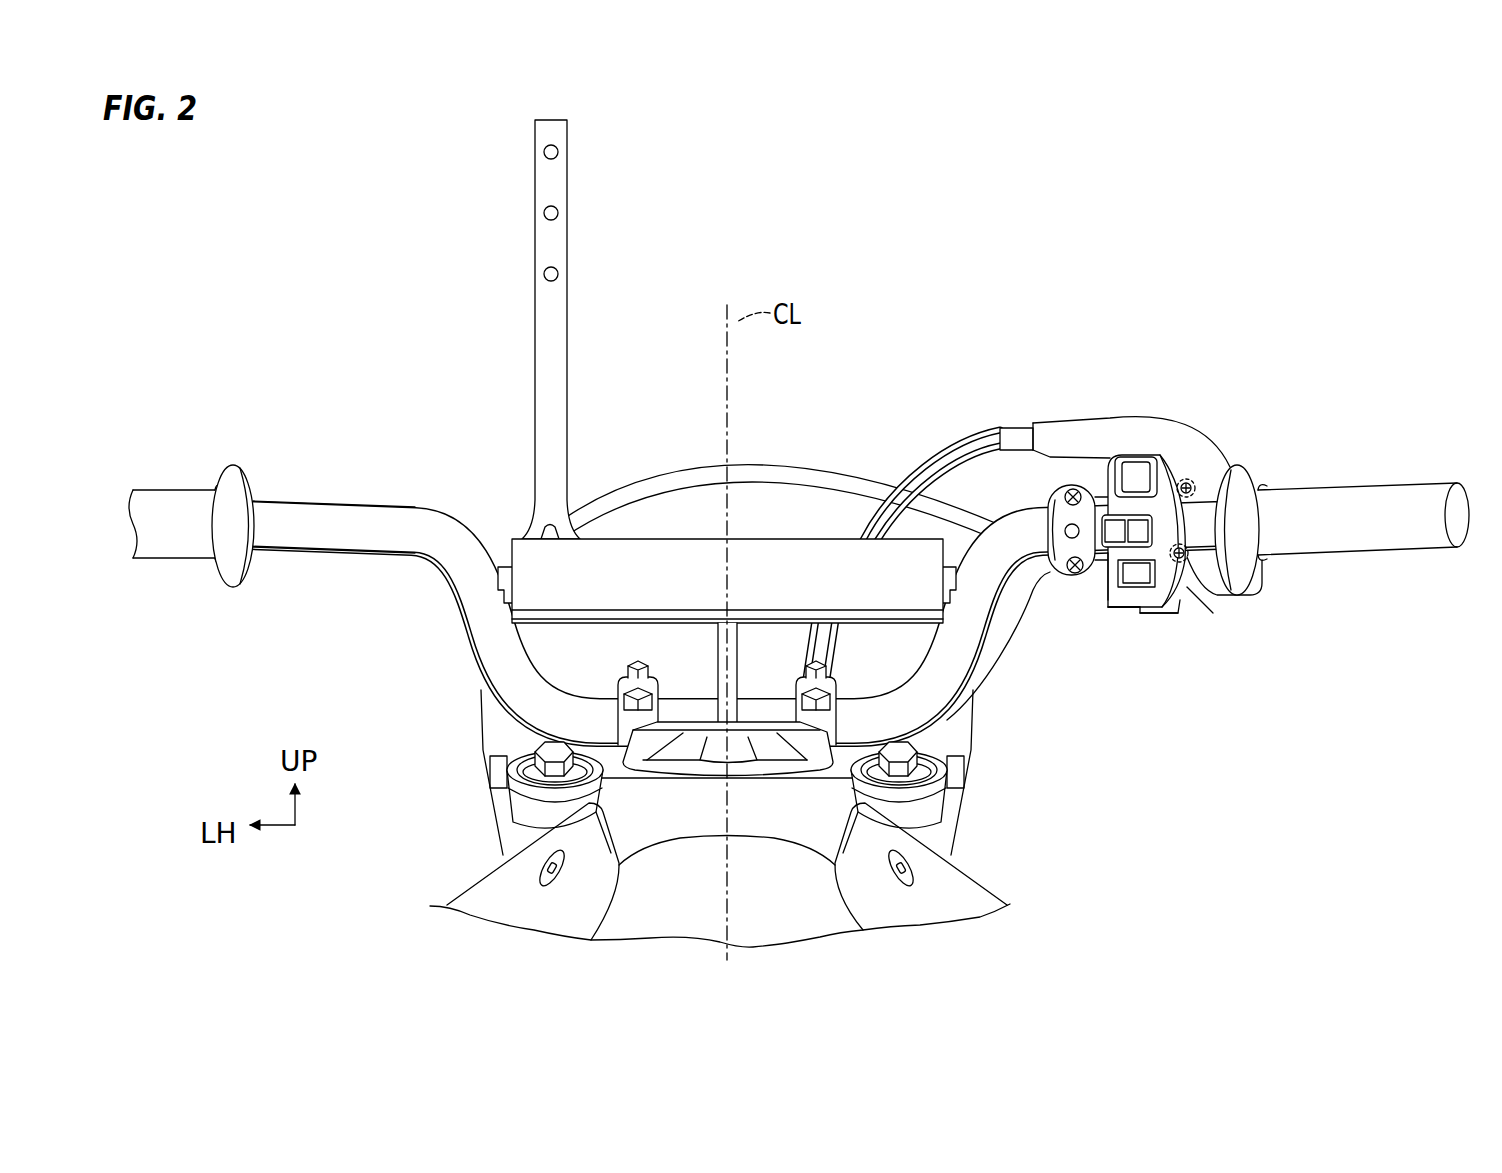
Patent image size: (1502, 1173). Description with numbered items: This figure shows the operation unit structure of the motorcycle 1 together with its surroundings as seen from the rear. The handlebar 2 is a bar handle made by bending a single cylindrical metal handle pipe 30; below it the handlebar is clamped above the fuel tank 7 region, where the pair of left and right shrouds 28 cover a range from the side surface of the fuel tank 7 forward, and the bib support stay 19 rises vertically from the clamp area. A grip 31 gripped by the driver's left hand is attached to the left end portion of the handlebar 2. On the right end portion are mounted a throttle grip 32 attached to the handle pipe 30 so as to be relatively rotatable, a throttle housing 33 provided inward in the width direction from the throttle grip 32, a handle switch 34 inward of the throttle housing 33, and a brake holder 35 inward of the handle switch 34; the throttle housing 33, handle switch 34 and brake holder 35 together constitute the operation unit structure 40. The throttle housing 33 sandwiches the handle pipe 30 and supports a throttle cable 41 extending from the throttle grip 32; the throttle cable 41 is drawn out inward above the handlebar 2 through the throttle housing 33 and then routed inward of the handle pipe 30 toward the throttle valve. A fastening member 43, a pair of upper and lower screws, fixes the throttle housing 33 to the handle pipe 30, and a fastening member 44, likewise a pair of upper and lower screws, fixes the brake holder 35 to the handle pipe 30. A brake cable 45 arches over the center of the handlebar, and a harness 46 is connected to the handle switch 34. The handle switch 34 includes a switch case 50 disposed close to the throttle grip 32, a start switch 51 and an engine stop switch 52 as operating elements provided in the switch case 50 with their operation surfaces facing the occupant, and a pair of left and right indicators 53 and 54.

The steering handle structure 1 is at (1270, 211).
The handlebar 2 is at (433, 503).
The fuel tank 7 is at (650, 803).
The bib support stay 19 is at (540, 243).
The shrouds 28 is at (487, 893).
The handle pipe 30 is at (320, 508).
The grip 31 is at (178, 498).
The throttle grip 32 is at (1385, 492).
The throttle housing 33 is at (1210, 580).
The handle switch 34 is at (1135, 615).
The brake holder 35 is at (1063, 526).
The operation unit structure 40 is at (1149, 630).
The throttle cable 41 is at (975, 443).
The fastening member 43 is at (1188, 480).
The fastening member 44 is at (1072, 489).
The brake cable 45 is at (780, 470).
The harness 46 is at (987, 692).
The switch case 50 is at (1172, 616).
The start switch 51 is at (1127, 578).
The engine stop switch 52 is at (1140, 457).
The indicator 53 is at (1115, 540).
The indicator 54 is at (1148, 532).